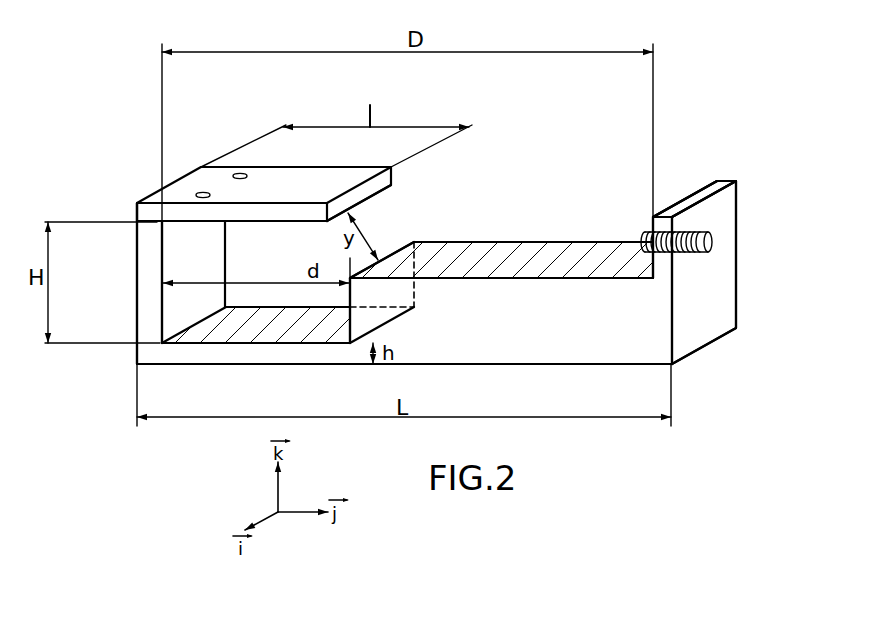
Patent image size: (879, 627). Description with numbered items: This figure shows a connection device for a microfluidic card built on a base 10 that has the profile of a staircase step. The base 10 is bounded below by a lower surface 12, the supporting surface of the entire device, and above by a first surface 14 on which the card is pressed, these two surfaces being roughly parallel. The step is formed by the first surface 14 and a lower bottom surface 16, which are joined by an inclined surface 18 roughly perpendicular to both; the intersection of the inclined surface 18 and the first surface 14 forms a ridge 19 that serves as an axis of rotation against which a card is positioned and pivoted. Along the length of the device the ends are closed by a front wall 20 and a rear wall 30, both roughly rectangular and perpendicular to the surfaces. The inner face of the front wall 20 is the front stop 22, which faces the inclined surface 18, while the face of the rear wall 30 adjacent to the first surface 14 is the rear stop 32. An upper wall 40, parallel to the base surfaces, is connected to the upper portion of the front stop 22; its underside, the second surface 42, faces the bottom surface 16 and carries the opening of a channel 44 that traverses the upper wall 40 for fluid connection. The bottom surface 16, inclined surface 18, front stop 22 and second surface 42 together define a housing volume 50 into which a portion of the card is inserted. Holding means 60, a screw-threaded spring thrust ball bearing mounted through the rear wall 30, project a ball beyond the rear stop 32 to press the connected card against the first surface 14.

The base 10 is at (587, 352).
The lower surface 12 is at (304, 371).
The first surface 14 is at (565, 258).
The bottom surface 16 is at (233, 327).
The inclined surface 18 is at (395, 290).
The ridge 19 is at (397, 250).
The front wall 20 is at (148, 242).
The front stop 22 is at (222, 232).
The rear wall 30 is at (718, 294).
The rear stop 32 is at (681, 186).
The upper wall 40 is at (193, 183).
The second surface 42 is at (381, 198).
The channel 44 is at (206, 192).
The housing volume 50 is at (282, 273).
The holding means 60 is at (712, 243).